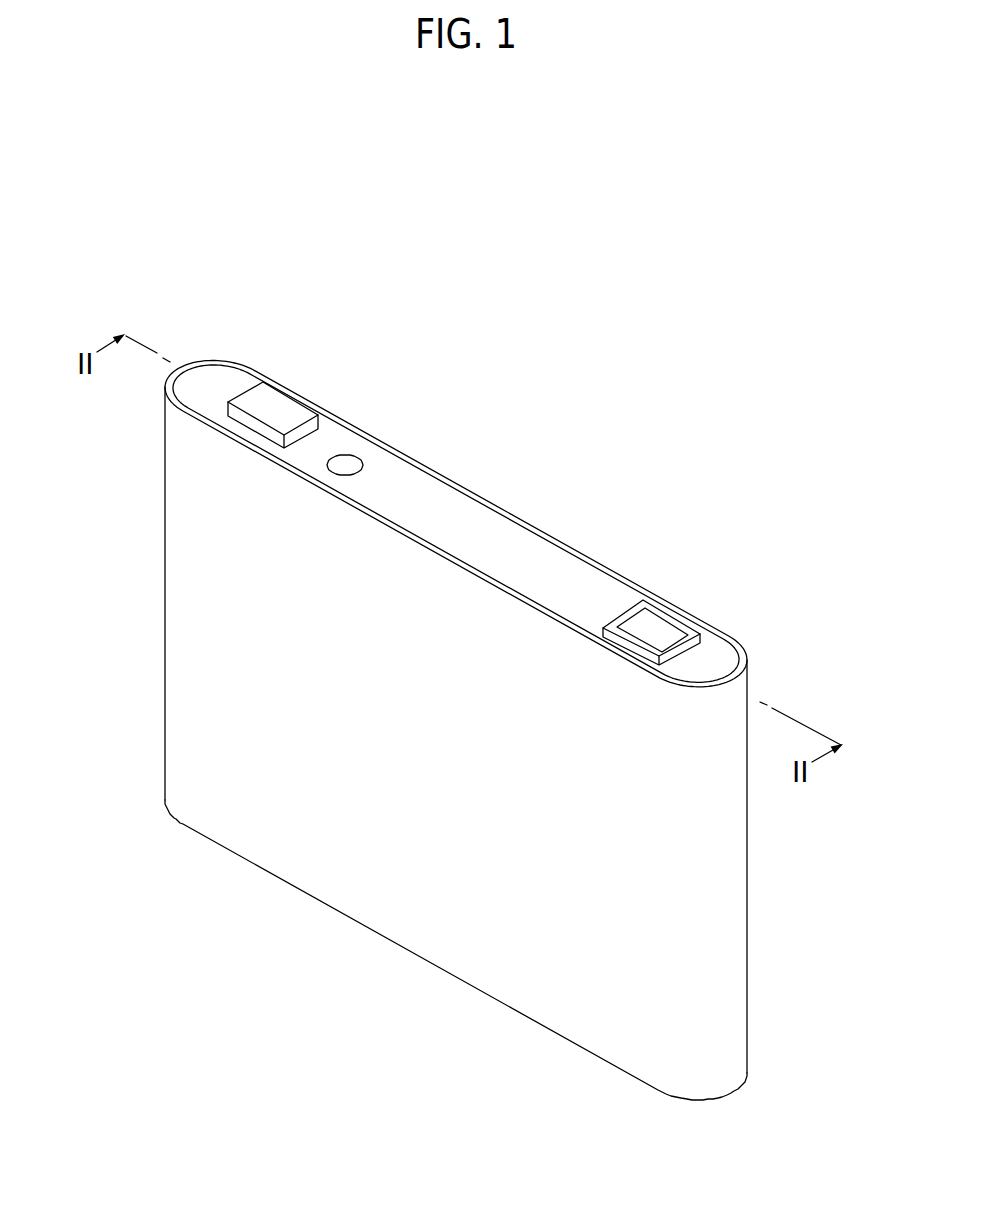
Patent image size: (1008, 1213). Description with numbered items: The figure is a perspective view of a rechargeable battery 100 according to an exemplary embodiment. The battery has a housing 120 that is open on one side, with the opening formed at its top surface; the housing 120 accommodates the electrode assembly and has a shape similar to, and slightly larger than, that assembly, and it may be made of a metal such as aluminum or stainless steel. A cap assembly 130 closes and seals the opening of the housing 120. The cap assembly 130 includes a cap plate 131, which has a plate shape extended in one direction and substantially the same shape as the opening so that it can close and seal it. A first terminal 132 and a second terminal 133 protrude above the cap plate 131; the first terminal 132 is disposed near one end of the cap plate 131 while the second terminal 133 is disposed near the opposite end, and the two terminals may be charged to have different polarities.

The rechargeable battery 100 is at (524, 207).
The housing 120 is at (368, 912).
The cap assembly 130 is at (497, 488).
The cap plate 131 is at (552, 567).
The first terminal 132 is at (663, 627).
The second terminal 133 is at (290, 410).